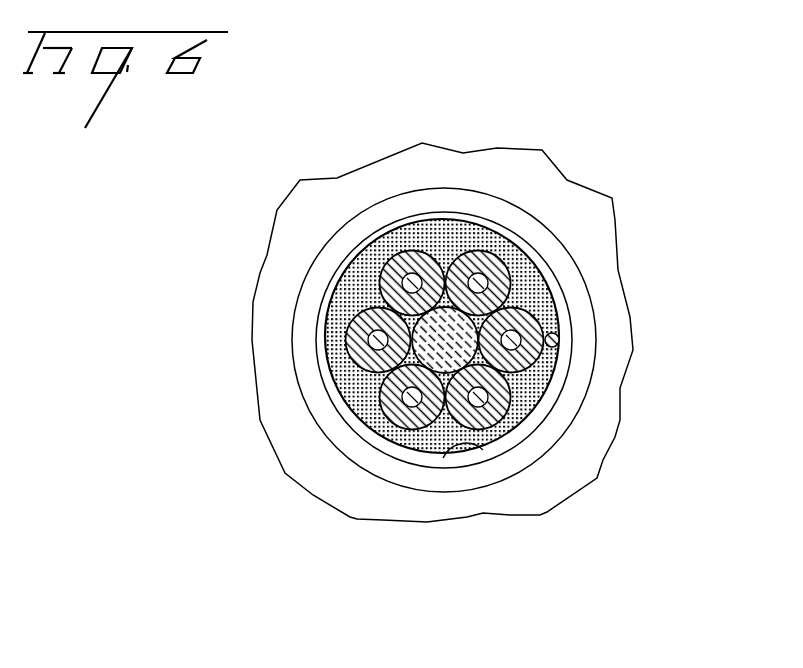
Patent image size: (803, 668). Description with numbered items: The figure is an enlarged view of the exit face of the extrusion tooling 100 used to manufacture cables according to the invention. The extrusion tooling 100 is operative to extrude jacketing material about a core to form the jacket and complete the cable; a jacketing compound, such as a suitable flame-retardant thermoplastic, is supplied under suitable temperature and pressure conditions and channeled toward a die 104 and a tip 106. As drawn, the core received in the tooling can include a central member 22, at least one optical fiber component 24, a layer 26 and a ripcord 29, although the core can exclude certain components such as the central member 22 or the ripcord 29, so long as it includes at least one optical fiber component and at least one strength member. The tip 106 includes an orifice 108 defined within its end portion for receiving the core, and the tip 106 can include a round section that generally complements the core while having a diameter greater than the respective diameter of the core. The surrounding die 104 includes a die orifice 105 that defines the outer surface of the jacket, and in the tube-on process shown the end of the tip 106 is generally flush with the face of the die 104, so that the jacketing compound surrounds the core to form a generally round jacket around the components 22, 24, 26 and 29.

The extrusion tooling 100 is at (238, 184).
The die 104 is at (300, 463).
The die orifice 105 is at (295, 300).
The tip 106 is at (510, 240).
The orifice 108 is at (483, 453).
The central member 22 is at (447, 357).
The optical fiber component 24 is at (509, 371).
The layer 26 is at (502, 305).
The ripcord 29 is at (560, 338).